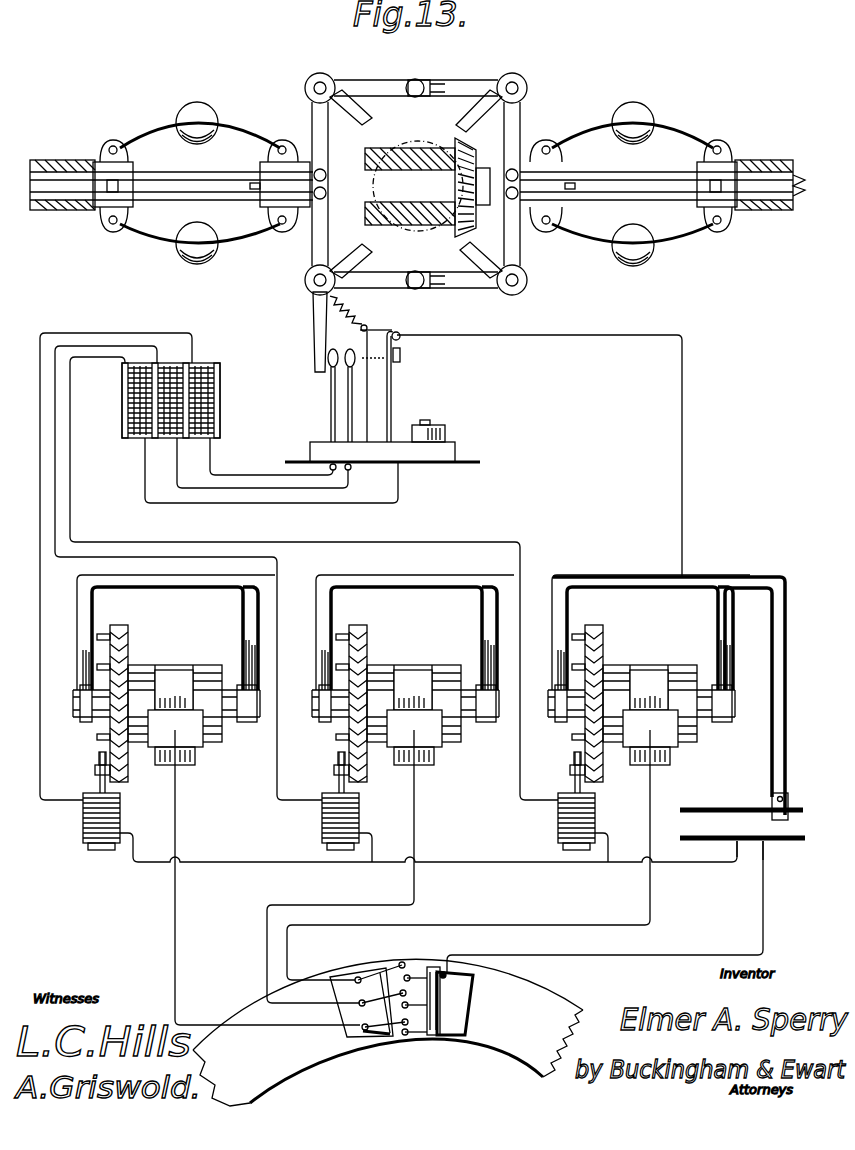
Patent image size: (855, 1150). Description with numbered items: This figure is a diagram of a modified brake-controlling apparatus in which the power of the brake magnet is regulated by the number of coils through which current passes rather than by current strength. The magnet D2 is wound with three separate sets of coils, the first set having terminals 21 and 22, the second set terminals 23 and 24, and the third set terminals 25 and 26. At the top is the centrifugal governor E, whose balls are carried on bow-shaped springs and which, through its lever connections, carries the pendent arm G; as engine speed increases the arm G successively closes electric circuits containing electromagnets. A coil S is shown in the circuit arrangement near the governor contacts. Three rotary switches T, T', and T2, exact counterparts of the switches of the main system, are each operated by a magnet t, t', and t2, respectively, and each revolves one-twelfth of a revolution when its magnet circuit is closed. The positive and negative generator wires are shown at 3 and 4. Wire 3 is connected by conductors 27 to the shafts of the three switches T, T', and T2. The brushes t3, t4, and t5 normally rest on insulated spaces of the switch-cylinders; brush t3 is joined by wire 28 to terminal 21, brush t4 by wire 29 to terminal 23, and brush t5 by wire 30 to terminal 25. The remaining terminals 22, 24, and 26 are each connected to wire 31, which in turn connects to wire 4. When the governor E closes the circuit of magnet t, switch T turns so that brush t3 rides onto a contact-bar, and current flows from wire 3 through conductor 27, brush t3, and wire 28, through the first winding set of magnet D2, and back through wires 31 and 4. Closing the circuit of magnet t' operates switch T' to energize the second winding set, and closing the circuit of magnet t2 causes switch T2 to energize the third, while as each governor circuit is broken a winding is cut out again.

The centrifugal governor E is at (417, 163).
The pendent arm G is at (318, 343).
The solenoid coil S is at (172, 383).
The rotary switch T is at (166, 703).
The rotary switch T' is at (405, 703).
The rotary switch T2 is at (641, 702).
The magnet t is at (110, 801).
The magnet t' is at (351, 801).
The magnet t2 is at (589, 801).
The brush t3 is at (175, 717).
The brush t4 is at (414, 717).
The brush t5 is at (650, 717).
The conductor 27 is at (165, 583).
The wire 28 is at (267, 877).
The wire 29 is at (414, 805).
The wire 30 is at (650, 786).
The wire 31 is at (686, 952).
The positive wire 3 is at (741, 797).
The negative wire 4 is at (742, 838).
The terminal 21 is at (402, 1035).
The terminal 22 is at (405, 1036).
The terminal 23 is at (393, 993).
The terminal 24 is at (385, 1017).
The terminal 25 is at (401, 964).
The terminal 26 is at (409, 976).
The magnet D2 is at (473, 1001).